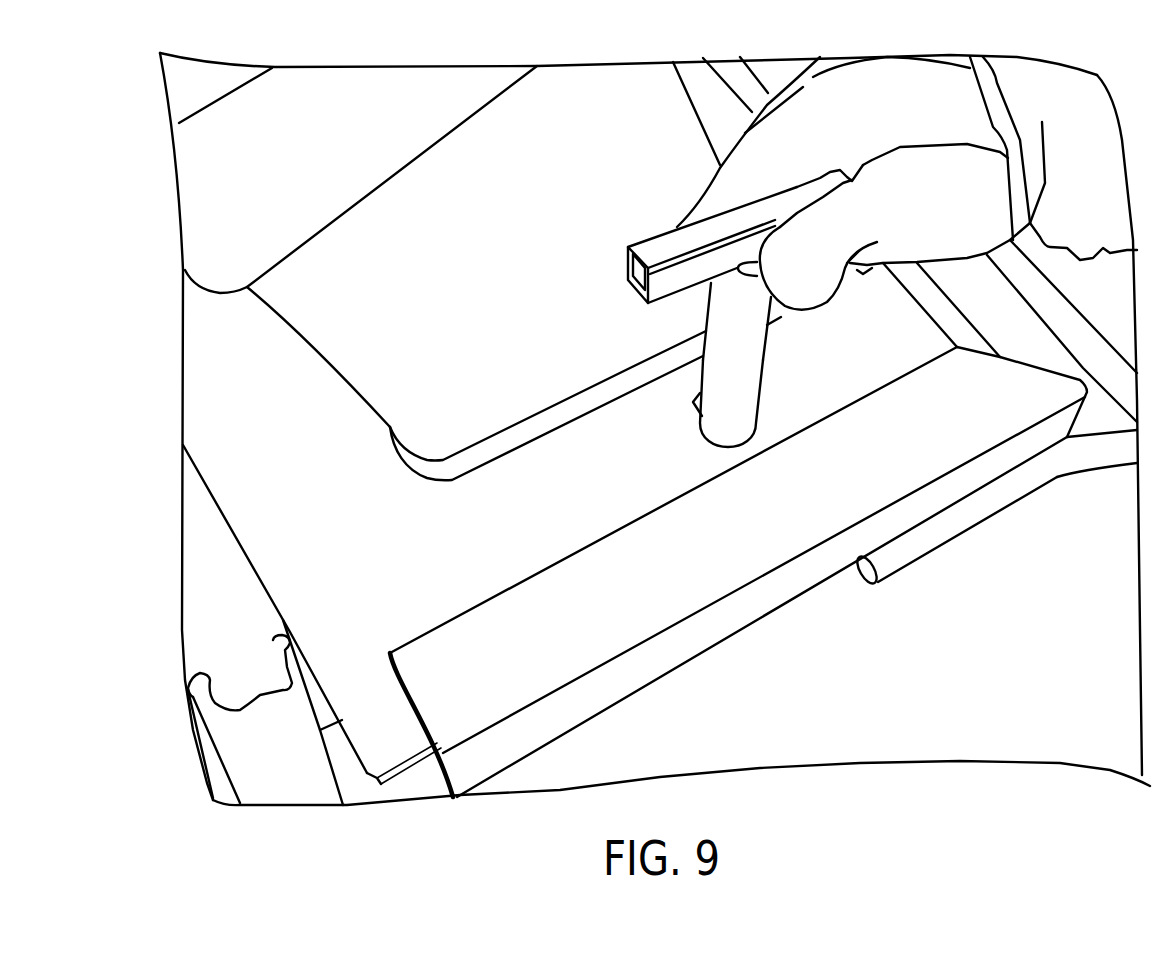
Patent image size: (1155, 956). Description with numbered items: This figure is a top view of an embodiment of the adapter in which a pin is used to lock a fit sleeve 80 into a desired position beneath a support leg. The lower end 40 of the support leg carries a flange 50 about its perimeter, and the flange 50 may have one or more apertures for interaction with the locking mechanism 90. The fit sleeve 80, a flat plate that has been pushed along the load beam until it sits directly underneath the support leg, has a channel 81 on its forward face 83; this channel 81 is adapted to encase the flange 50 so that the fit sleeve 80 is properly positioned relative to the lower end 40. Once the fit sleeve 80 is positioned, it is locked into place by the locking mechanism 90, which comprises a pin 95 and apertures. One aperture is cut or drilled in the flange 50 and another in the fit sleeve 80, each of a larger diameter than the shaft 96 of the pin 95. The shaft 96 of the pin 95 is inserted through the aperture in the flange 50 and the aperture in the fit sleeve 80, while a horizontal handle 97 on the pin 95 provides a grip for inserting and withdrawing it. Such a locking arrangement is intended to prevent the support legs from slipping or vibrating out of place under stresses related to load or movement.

The lower end 40 is at (345, 370).
The flange 50 is at (258, 548).
The fit sleeve 80 is at (963, 442).
The channel 81 is at (478, 712).
The forward face 83 is at (373, 777).
The locking mechanism 90 is at (747, 408).
The pin 95 is at (692, 275).
The shaft 96 is at (750, 320).
The horizontal handle 97 is at (655, 243).